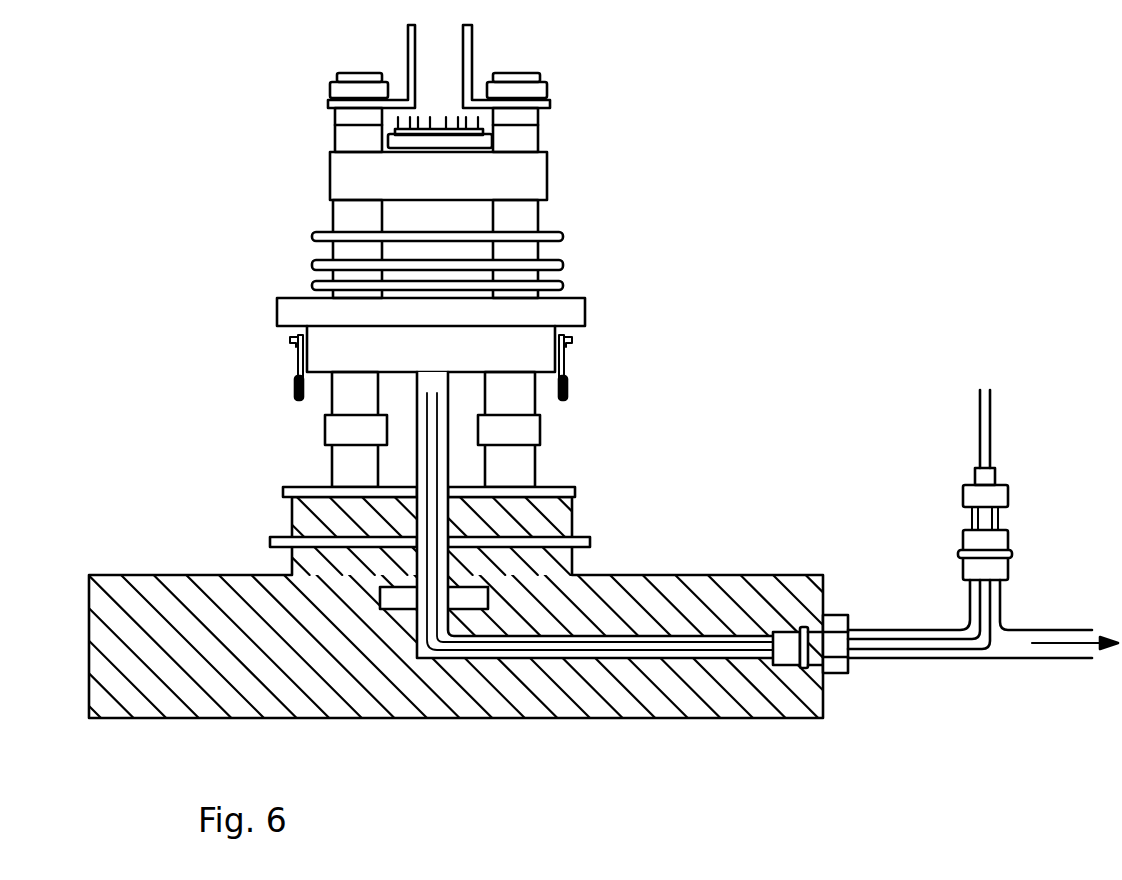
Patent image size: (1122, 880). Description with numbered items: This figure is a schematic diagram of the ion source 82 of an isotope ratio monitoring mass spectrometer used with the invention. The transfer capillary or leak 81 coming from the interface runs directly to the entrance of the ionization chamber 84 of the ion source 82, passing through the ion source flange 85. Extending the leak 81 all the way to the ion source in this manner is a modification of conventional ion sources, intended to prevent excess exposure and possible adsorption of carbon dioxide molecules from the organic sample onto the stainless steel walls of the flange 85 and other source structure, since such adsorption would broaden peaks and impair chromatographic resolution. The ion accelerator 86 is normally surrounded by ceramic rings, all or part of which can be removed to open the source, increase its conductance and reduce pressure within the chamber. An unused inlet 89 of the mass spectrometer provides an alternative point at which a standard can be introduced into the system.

The transfer capillary 81 is at (980, 423).
The ion source 82 is at (583, 201).
The ionization chamber 84 is at (588, 313).
The ion source flange 85 is at (712, 718).
The ion accelerator 86 is at (327, 252).
The unused inlet 89 is at (1058, 660).